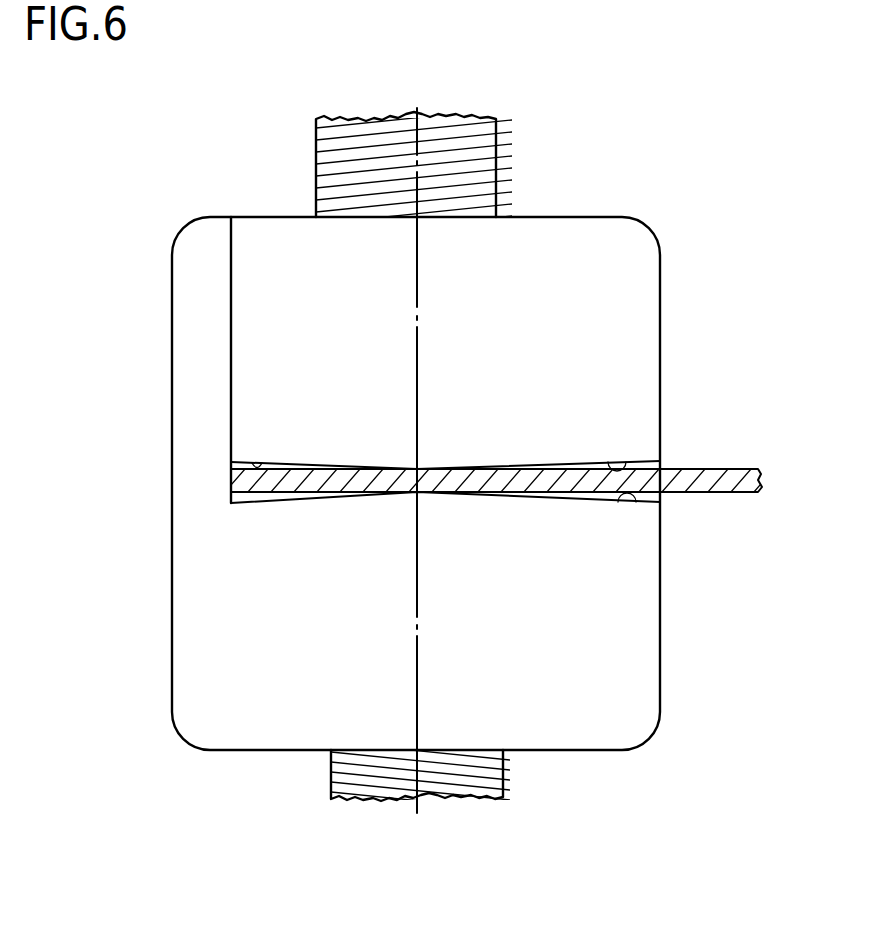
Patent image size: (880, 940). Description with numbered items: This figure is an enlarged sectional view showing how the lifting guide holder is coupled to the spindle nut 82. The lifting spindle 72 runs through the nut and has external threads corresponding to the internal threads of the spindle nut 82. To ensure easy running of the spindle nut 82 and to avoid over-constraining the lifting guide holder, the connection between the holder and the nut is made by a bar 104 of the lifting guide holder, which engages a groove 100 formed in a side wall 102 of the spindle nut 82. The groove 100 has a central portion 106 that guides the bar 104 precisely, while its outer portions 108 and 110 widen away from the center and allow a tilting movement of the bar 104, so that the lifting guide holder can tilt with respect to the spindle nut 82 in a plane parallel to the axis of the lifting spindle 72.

The lifting spindle 72 is at (510, 790).
The spindle nut 82 is at (598, 672).
The groove 100 is at (634, 500).
The side wall 102 is at (598, 624).
The bar 104 is at (737, 493).
The central portion 106 is at (430, 470).
The outer portion 108 is at (604, 460).
The outer portion 110 is at (256, 466).